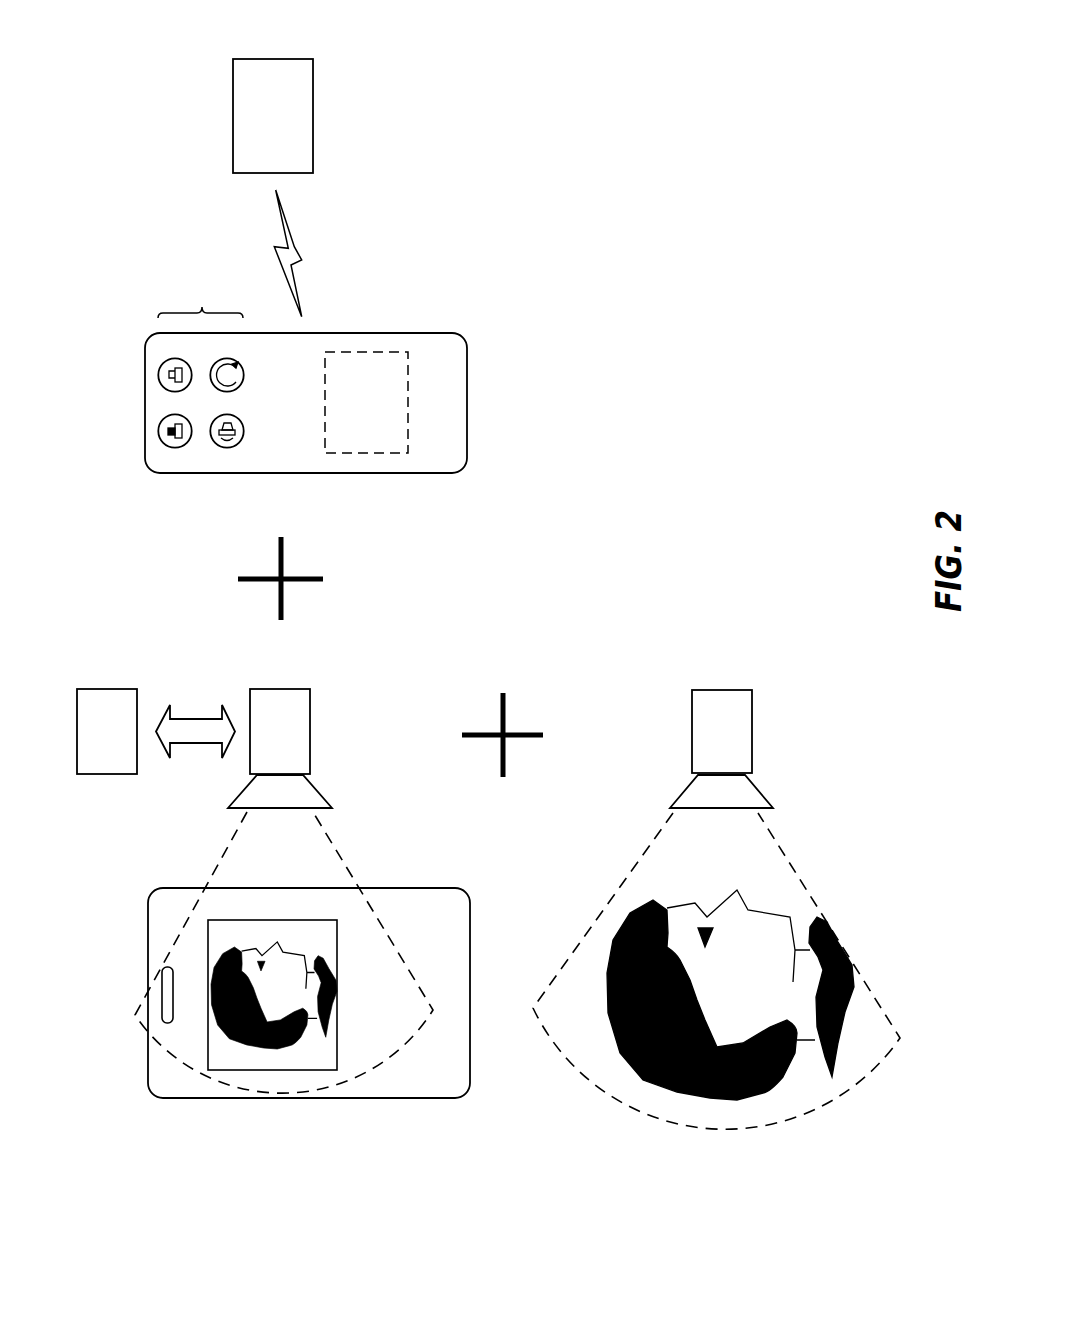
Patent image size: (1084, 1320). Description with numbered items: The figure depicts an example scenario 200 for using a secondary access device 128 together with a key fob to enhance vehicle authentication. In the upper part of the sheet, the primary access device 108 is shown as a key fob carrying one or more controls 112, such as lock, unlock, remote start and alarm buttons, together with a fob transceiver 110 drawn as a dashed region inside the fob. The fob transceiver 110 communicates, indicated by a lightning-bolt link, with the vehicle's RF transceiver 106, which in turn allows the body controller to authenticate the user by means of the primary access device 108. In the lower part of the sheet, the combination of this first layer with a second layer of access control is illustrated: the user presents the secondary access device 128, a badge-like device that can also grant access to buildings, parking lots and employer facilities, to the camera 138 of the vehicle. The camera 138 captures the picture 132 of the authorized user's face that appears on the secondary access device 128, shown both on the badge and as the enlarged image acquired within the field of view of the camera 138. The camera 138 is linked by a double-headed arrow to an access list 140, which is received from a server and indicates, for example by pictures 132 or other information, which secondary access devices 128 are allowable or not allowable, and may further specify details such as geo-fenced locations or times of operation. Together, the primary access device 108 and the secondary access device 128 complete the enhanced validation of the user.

The RF transceiver 106 is at (284, 131).
The primary access device 108 is at (460, 419).
The fob transceiver 110 is at (378, 419).
The controls 112 is at (212, 299).
The secondary access device 128 is at (460, 1009).
The picture 132 is at (370, 1009).
The camera 138 is at (732, 748).
The access list 140 is at (118, 748).
The example scenario 200 is at (47, 1128).